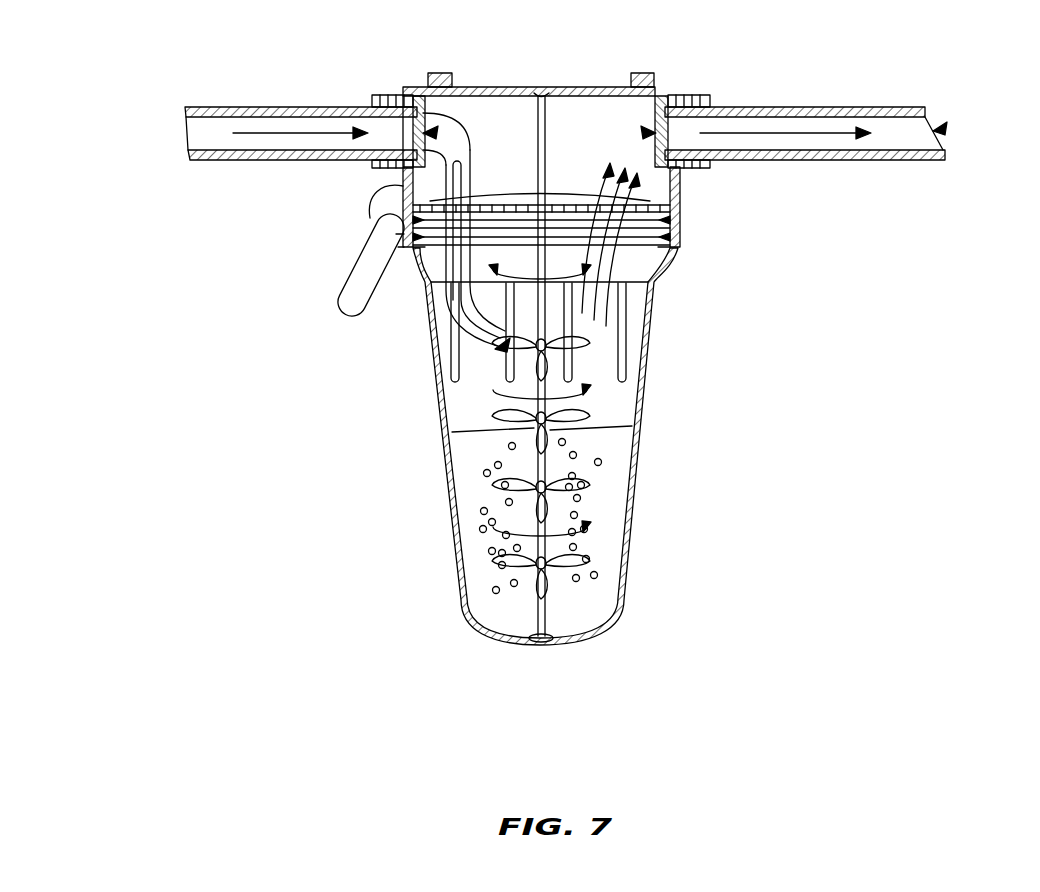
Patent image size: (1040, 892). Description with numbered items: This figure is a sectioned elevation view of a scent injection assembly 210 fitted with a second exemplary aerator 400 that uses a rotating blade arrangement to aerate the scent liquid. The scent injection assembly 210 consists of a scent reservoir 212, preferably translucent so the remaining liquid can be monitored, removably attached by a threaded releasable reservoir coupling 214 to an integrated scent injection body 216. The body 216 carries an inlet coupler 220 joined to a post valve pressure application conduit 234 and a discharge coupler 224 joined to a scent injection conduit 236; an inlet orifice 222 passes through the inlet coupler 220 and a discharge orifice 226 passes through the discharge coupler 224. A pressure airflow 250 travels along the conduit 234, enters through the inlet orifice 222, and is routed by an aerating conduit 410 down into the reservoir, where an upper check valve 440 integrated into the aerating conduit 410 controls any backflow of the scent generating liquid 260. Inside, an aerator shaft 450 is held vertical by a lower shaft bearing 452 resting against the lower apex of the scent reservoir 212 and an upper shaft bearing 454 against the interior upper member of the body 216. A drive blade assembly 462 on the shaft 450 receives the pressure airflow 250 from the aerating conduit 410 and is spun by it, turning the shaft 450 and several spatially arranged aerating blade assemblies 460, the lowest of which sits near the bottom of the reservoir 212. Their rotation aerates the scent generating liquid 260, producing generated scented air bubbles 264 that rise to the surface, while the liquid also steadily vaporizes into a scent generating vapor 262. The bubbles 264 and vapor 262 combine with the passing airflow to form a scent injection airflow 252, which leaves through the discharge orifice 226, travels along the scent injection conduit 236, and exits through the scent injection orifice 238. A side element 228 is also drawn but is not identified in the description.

The scent injection assembly 210 is at (346, 633).
The scent reservoir 212 is at (452, 545).
The releasable reservoir coupling 214 is at (683, 241).
The integrated scent injection body 216 is at (682, 200).
The inlet coupler 220 is at (392, 96).
The inlet orifice 222 is at (437, 133).
The discharge coupler 224 is at (695, 95).
The discharge orifice 226 is at (642, 133).
The handle 228 is at (352, 270).
The post valve pressure application conduit 234 is at (297, 107).
The scent injection conduit 236 is at (797, 107).
The scent injection orifice 238 is at (940, 128).
The pressure airflow 250 is at (290, 134).
The scent injection airflow 252 is at (808, 134).
The scent generating liquid 260 is at (584, 495).
The scent generating vapor 262 is at (623, 397).
The generated scented air bubbles 264 is at (592, 454).
The aerator 400 is at (444, 286).
The aerating conduit 410 is at (471, 154).
The upper check valve 440 is at (462, 171).
The aerator shaft 450 is at (548, 156).
The lower shaft bearing 452 is at (540, 641).
The upper shaft bearing 454 is at (545, 92).
The aerating blade assembly 460 is at (578, 486).
The drive blade assembly 462 is at (610, 332).